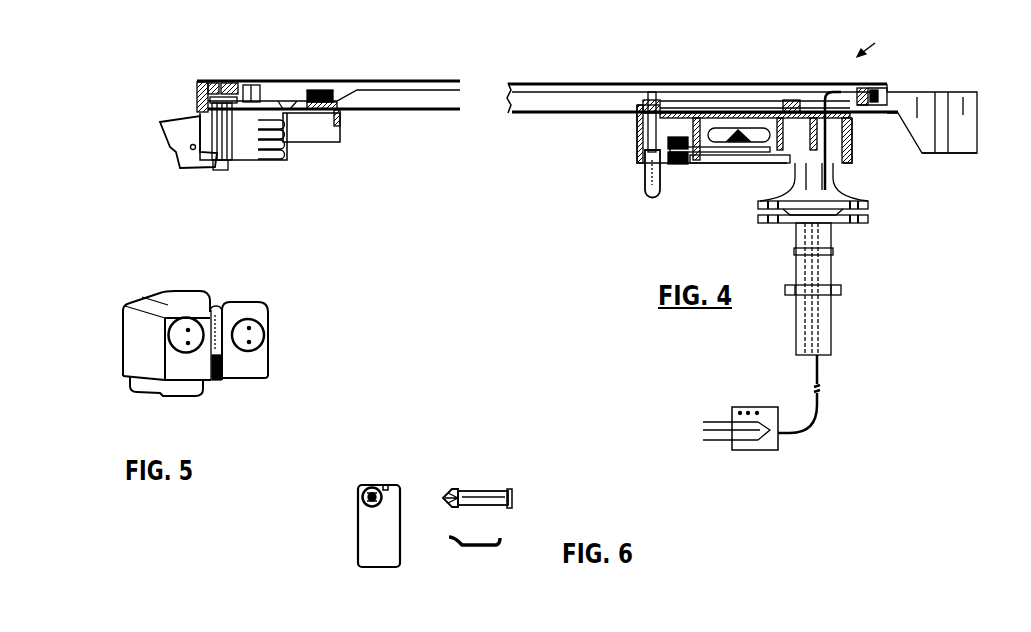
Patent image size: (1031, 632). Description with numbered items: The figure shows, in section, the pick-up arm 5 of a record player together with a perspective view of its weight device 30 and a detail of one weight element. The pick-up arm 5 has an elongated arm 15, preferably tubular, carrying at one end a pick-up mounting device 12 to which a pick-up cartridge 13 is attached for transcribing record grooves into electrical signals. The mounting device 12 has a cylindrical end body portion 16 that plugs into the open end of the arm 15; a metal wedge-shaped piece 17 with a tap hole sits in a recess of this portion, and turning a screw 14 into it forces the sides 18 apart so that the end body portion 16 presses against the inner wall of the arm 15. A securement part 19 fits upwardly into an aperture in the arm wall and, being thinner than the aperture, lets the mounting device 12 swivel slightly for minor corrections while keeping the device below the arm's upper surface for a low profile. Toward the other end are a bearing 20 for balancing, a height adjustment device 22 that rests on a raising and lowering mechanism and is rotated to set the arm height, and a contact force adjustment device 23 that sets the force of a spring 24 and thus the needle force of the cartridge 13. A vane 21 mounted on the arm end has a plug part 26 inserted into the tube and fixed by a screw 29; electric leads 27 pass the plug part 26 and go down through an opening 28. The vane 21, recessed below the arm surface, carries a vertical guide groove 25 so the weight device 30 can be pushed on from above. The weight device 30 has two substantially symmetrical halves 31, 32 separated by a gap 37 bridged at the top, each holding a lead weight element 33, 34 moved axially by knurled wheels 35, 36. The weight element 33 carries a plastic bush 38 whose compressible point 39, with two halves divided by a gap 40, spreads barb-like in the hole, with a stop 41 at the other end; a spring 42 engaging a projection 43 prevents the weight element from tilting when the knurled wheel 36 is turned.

In FIG. 4, the pick-up arm 5 is at (762, 66).
In FIG. 4, the pick-up mounting device 12 is at (335, 133).
In FIG. 4, the pick-up cartridge 13 is at (162, 135).
In FIG. 4, the screw 14 is at (197, 92).
In FIG. 4, the elongated arm 15 is at (425, 112).
In FIG. 4, the cylindrical end body portion 16 is at (197, 87).
In FIG. 4, the wedge-shaped piece 17 is at (237, 83).
In FIG. 4, the sides 18 is at (217, 85).
In FIG. 4, the securement part 19 is at (320, 93).
In FIG. 4, the bearing 20 is at (832, 268).
In FIG. 4, the vane 21 is at (953, 97).
In FIG. 4, the height adjustment device 22 is at (643, 187).
In FIG. 4, the contact force adjustment device 23 is at (682, 165).
In FIG. 4, the spring 24 is at (772, 162).
In FIG. 4, the vertical guide groove 25 is at (938, 145).
In FIG. 4, the plug part 26 is at (757, 108).
In FIG. 4, the electric leads 27 is at (747, 93).
In FIG. 4, the opening 28 is at (825, 85).
In FIG. 4, the screw 29 is at (870, 87).
In FIG. 5, the weight device 30 is at (152, 286).
In FIG. 5, the half 31 is at (132, 343).
In FIG. 5, the half 32 is at (263, 362).
In FIG. 5, the weight element 33 is at (153, 391).
In FIG. 6, the weight element 33 is at (358, 547).
In FIG. 5, the weight element 34 is at (213, 383).
In FIG. 5, the knurled wheel 35 is at (187, 318).
In FIG. 5, the knurled wheel 36 is at (260, 328).
In FIG. 5, the gap 37 is at (226, 307).
In FIG. 6, the plastic bush 38 is at (372, 488).
In FIG. 6, the compressible point 39 is at (449, 490).
In FIG. 6, the gap 40 is at (450, 502).
In FIG. 6, the stop 41 is at (513, 493).
In FIG. 6, the spring 42 is at (490, 547).
In FIG. 6, the projection 43 is at (388, 485).